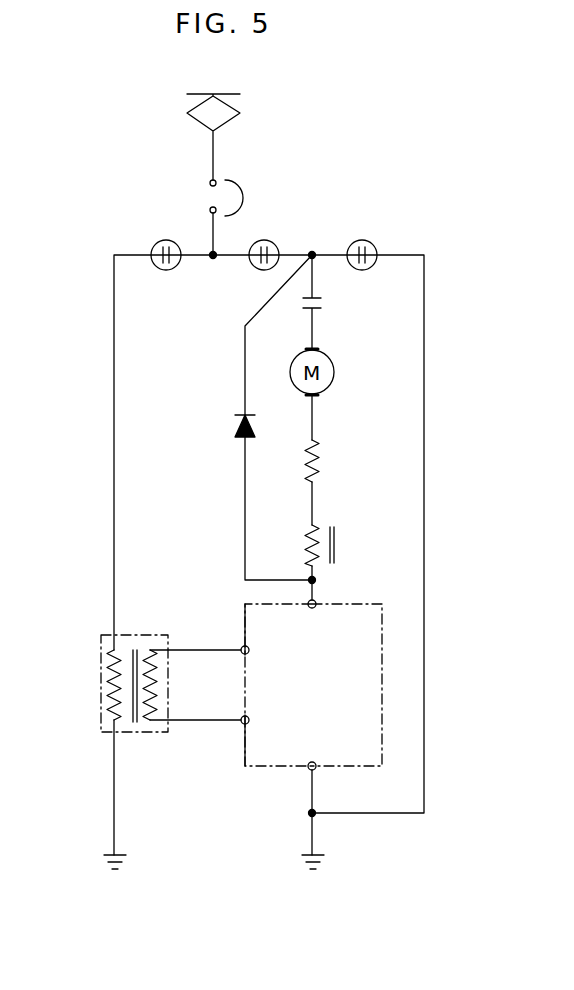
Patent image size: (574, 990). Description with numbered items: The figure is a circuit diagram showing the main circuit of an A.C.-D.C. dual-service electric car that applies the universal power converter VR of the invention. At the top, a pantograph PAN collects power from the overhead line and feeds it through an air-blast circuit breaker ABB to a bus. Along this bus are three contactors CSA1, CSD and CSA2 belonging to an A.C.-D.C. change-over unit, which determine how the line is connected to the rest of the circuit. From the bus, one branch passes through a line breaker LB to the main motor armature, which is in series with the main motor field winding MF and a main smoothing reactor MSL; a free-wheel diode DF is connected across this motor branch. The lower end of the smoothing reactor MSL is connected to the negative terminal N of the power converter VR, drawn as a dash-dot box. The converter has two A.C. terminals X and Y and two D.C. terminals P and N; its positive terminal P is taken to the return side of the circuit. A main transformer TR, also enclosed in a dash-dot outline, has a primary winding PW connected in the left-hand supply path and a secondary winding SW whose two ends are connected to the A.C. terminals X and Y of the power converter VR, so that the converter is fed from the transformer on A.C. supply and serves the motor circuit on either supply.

The pantograph PAN is at (240, 115).
The air-blast circuit breaker ABB is at (243, 204).
The contactor CSA1 is at (176, 268).
The contactor CSD is at (253, 268).
The contactor CSA2 is at (358, 268).
The line breaker LB is at (322, 304).
The free-wheel diode DF is at (251, 425).
The main motor field winding MF is at (320, 462).
The main smoothing reactor MSL is at (337, 545).
The negative terminal N is at (316, 600).
The universal power converter VR is at (346, 604).
The A.C. terminal X is at (242, 646).
The A.C. terminal Y is at (249, 718).
The positive terminal P is at (315, 770).
The main transformer TR is at (150, 635).
The primary winding PW is at (112, 686).
The secondary winding SW is at (158, 693).